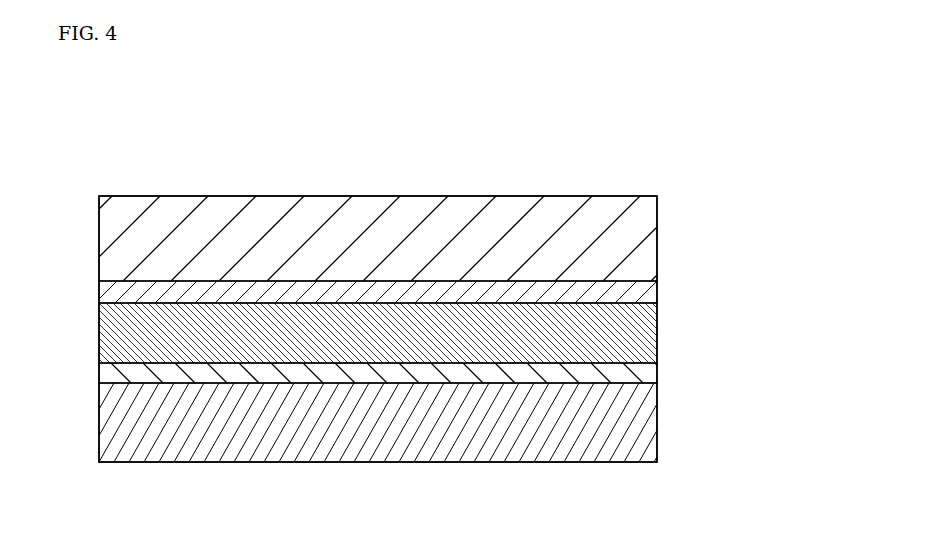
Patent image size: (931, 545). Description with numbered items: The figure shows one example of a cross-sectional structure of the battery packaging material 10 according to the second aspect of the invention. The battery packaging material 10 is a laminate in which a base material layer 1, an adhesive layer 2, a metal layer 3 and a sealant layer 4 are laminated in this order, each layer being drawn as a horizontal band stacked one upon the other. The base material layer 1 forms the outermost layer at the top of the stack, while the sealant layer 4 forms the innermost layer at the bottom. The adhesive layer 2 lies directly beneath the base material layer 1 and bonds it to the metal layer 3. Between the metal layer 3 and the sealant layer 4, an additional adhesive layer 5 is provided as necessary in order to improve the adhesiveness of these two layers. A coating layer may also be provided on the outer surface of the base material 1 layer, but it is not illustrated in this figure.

The battery packaging material 10 is at (397, 172).
The base material layer 1 is at (657, 239).
The adhesive layer 2 is at (657, 295).
The metal layer 3 is at (657, 342).
The adhesive layer 5 is at (657, 377).
The sealant layer 4 is at (657, 420).